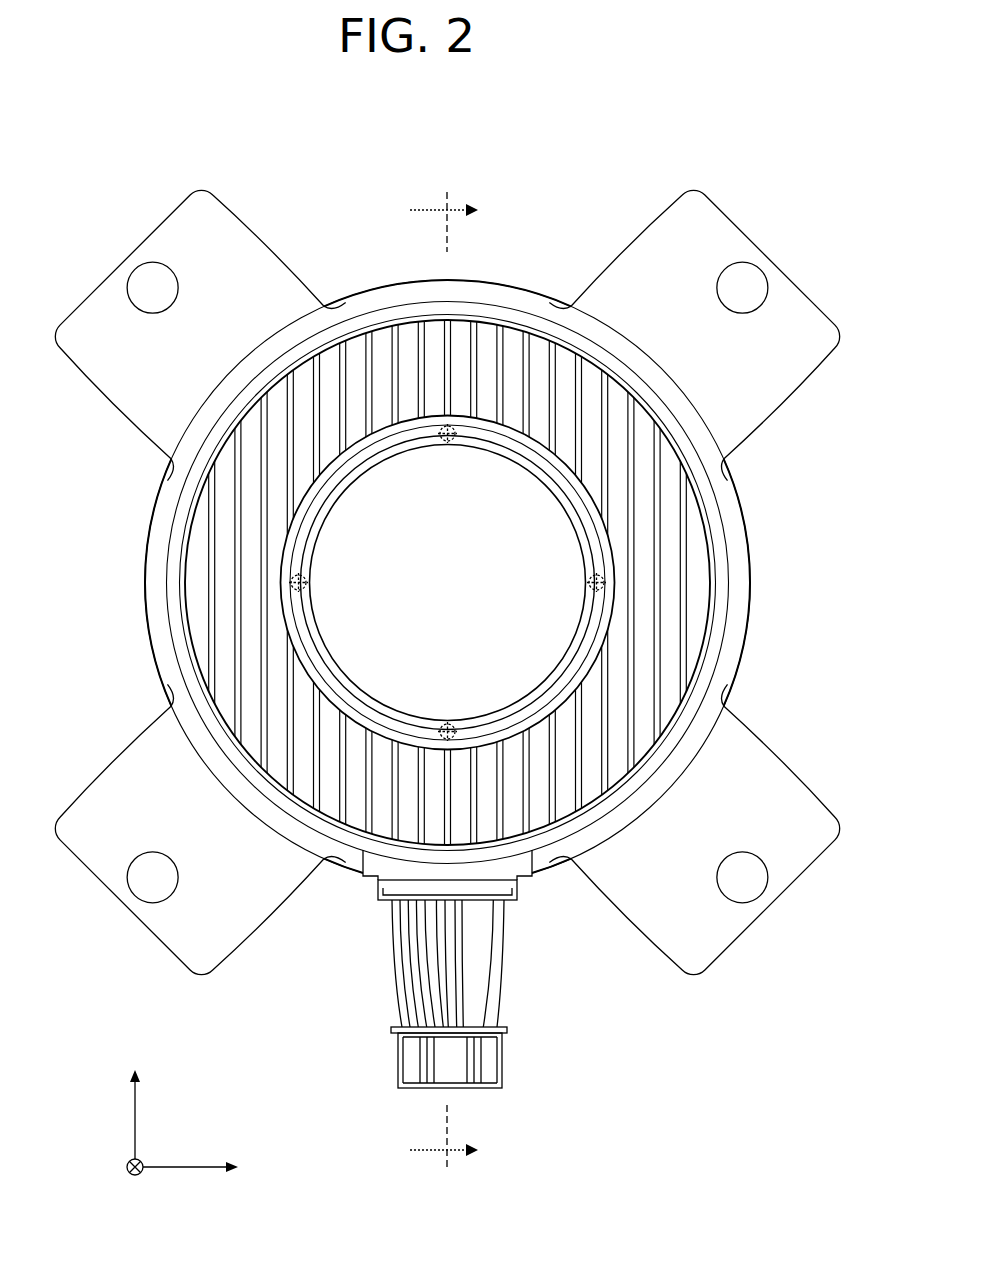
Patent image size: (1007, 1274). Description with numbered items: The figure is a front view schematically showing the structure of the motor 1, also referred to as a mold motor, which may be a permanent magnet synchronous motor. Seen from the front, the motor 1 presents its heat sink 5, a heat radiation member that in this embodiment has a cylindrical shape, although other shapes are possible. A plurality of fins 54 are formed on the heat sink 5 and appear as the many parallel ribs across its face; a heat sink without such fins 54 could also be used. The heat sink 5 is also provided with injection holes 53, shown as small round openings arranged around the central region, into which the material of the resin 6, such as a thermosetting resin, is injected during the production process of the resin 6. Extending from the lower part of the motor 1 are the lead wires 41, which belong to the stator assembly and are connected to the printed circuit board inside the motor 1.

The motor 1 is at (163, 133).
The heat sink 5 is at (727, 583).
The resin 6 is at (700, 233).
The lead wires 41 is at (511, 975).
The injection holes 53 is at (447, 441).
The fins 54 is at (268, 591).